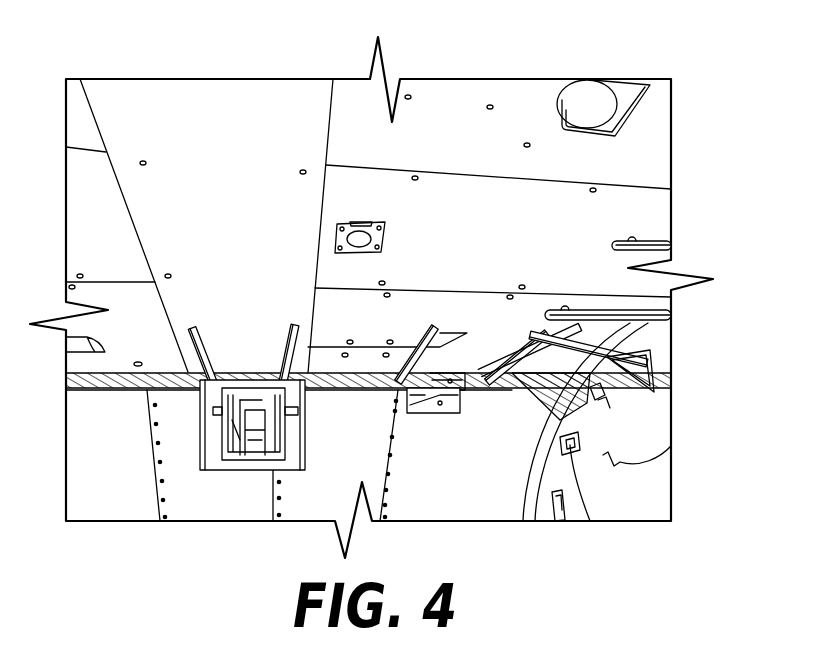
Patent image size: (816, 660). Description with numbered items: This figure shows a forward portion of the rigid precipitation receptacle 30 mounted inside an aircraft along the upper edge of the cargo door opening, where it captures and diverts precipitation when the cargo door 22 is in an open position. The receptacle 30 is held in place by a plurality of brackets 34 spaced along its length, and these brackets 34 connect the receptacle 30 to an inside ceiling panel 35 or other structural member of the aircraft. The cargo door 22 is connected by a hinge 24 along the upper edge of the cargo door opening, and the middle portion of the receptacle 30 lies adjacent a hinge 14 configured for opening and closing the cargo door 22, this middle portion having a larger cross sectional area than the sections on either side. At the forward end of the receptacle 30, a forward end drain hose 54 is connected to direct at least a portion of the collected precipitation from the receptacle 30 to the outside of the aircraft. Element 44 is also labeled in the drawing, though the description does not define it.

The hinge 14 is at (227, 440).
The cargo door 22 is at (513, 438).
The hinge 24 is at (450, 413).
The precipitation receptacle 30 is at (360, 366).
The brackets 34 is at (197, 333).
The inside ceiling panel 35 is at (268, 88).
The brace assembly 44 is at (600, 358).
The forward end drain hose 54 is at (535, 473).